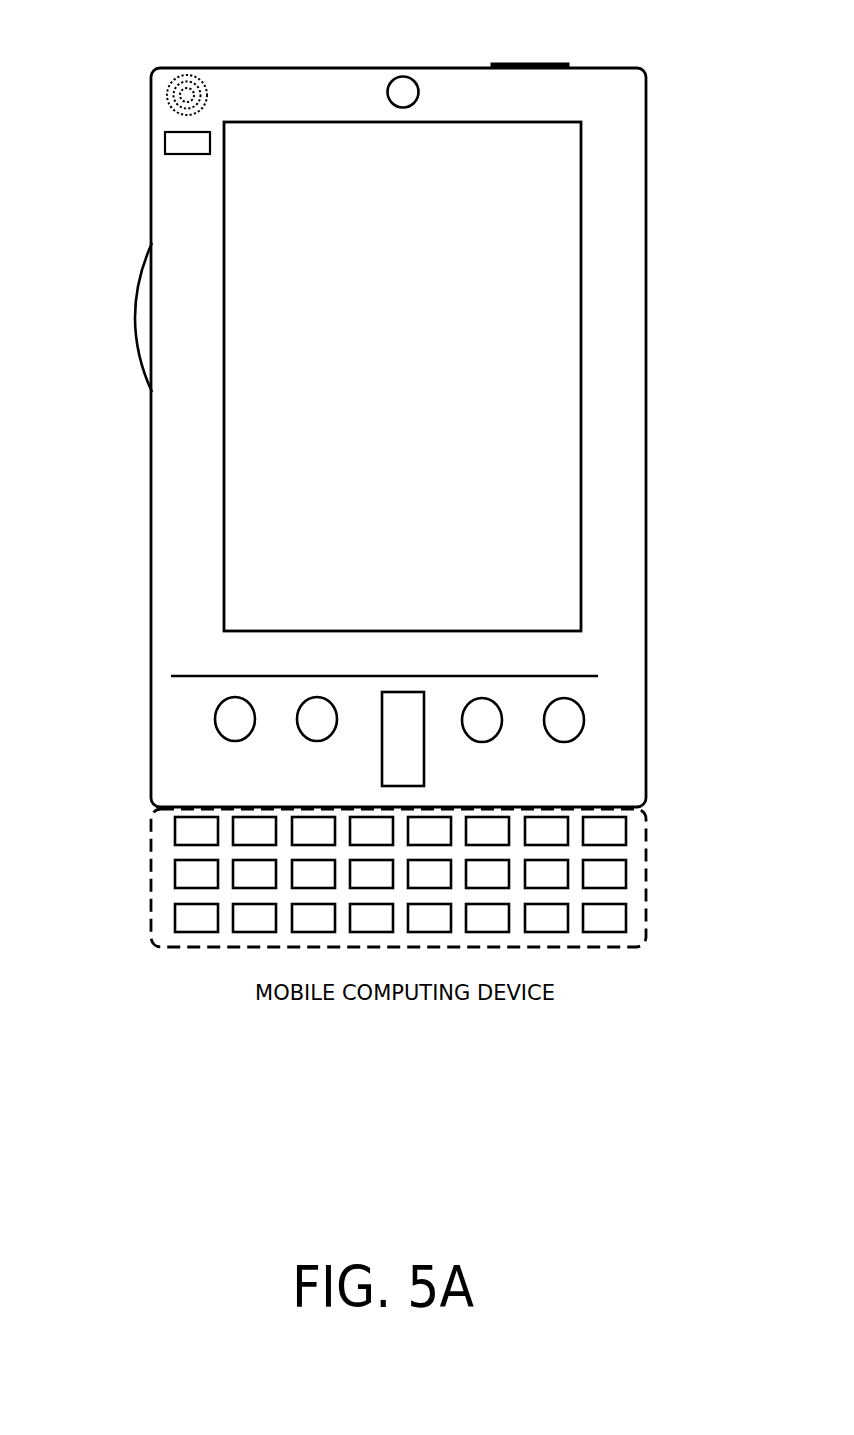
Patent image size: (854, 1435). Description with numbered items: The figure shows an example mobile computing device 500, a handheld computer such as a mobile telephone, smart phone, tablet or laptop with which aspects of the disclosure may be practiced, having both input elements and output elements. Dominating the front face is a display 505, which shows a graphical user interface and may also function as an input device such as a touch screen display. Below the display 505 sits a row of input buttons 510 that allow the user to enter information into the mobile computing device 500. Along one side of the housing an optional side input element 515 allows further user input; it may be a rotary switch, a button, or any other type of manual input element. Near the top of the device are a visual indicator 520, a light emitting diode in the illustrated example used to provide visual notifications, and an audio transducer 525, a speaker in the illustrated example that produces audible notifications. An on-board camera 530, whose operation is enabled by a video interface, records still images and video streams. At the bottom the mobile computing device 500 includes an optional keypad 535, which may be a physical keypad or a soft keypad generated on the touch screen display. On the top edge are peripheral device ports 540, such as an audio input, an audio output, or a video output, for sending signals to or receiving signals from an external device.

The mobile computing device 500 is at (646, 97).
The display 505 is at (253, 470).
The input buttons 510 is at (382, 747).
The side input element 515 is at (128, 302).
The visual indicator 520 is at (170, 140).
The audio transducer 525 is at (168, 88).
The on-board camera 530 is at (395, 77).
The keypad 535 is at (163, 877).
The peripheral device ports 540 is at (524, 64).